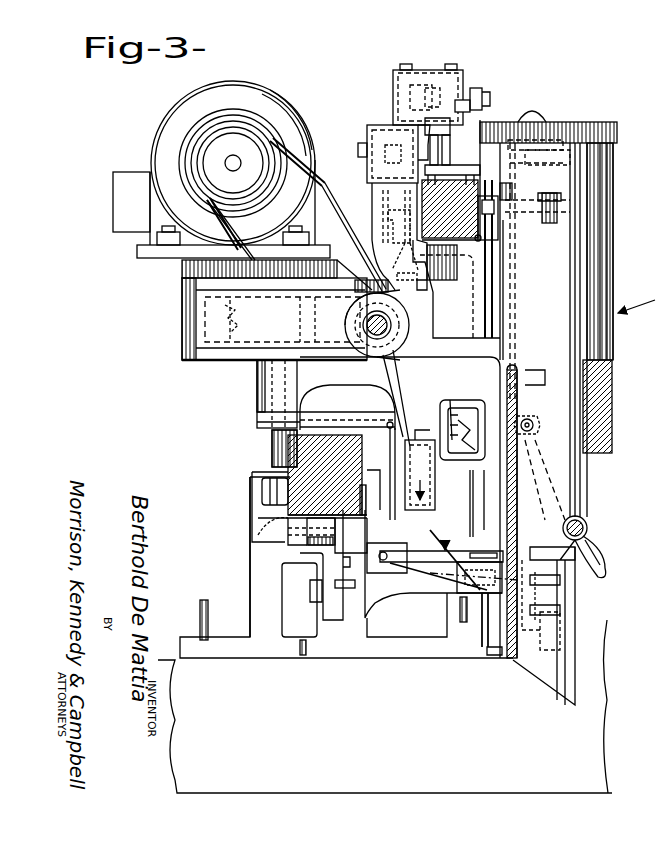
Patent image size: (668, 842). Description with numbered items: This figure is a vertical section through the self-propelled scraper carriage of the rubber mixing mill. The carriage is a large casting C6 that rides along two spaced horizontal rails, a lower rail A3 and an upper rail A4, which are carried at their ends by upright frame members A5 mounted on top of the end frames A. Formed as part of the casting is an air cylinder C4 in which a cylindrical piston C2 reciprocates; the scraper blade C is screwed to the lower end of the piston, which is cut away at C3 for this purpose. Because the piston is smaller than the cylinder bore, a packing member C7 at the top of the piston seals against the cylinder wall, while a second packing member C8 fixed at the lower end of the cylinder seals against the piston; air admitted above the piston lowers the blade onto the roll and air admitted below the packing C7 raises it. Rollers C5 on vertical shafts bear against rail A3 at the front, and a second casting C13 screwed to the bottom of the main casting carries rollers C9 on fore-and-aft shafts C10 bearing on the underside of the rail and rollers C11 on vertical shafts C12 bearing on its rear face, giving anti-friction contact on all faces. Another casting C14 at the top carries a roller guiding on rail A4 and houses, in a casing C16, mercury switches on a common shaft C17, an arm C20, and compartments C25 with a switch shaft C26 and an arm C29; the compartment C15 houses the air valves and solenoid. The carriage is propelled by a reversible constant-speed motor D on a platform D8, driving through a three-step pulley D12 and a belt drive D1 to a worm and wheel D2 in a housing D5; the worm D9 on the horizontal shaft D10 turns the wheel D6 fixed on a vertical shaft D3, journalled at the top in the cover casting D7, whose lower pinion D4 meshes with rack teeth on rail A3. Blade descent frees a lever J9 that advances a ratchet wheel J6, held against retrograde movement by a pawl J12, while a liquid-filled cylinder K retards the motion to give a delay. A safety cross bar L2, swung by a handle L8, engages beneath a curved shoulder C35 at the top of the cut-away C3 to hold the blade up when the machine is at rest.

The motor D is at (283, 106).
The belt drive D1 is at (188, 133).
The three step pulley D12 is at (195, 157).
The platform D8 is at (140, 247).
The casting D7 is at (225, 272).
The housing D5 is at (205, 302).
The wheel D6 is at (205, 323).
The worm and wheel D2 is at (205, 343).
The vertical shaft D3 is at (265, 383).
The pinion D4 is at (270, 440).
The horizontal rail A3 is at (288, 470).
The worm D9 is at (397, 328).
The horizontal shaft D10 is at (385, 325).
The end frames A is at (385, 486).
The horizontal frame member A4 is at (477, 237).
The upright frame members A5 is at (253, 603).
The scraper blade C is at (600, 640).
The piston C2 is at (583, 488).
The cut-away portion C3 is at (590, 577).
The cylinder C4 is at (612, 262).
The rollers C5 is at (398, 500).
The casting C6 is at (430, 410).
The packing member C7 is at (588, 207).
The packing member C8 is at (585, 460).
The rollers C9 is at (300, 548).
The fore-and-aft shafts C10 is at (290, 528).
The rollers C11 is at (262, 492).
The vertical shafts C12 is at (262, 514).
The casting C13 is at (503, 198).
The casting C14 is at (373, 193).
The compartment C15 is at (487, 160).
The casing C16 is at (430, 70).
The shaft C17 is at (488, 96).
The arm C20 is at (385, 148).
The casings C25 is at (383, 125).
The rotatable shaft C26 is at (433, 162).
The arm C29 is at (440, 140).
The curved shoulder C35 is at (588, 525).
The ratchet wheel J6 is at (470, 437).
The lever J9 is at (473, 598).
The spring-pressed pawl J12 is at (455, 465).
The cylinder K is at (443, 466).
The cross bar L2 is at (606, 545).
The handle L8 is at (600, 572).